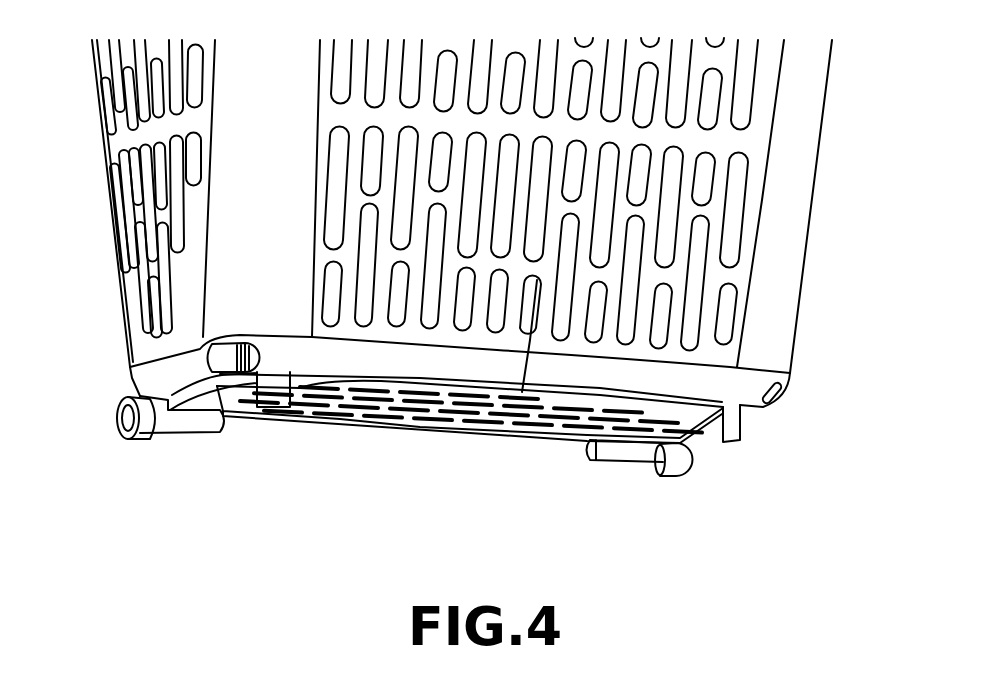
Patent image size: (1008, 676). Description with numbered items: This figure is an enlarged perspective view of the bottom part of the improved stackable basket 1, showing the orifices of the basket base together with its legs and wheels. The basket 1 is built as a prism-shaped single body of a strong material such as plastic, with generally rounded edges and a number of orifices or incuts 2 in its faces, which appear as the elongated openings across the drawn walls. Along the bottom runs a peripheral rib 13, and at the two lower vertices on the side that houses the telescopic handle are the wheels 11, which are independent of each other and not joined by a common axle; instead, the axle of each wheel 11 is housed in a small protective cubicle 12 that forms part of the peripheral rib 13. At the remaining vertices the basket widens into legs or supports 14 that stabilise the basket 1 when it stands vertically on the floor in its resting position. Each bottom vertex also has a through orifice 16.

The improved stackable basket 1 is at (822, 297).
The orifices or incuts 2 is at (712, 108).
The wheels 11 is at (140, 437).
The protective cubicle 12 is at (192, 427).
The peripheral rib 13 is at (417, 430).
The legs or supports 14 is at (270, 395).
The through orifice 16 is at (220, 357).